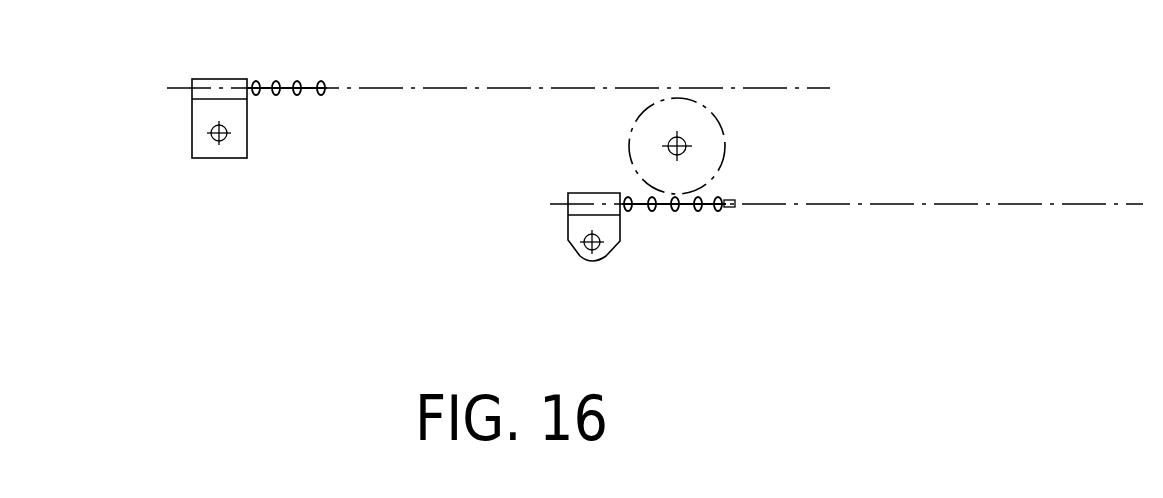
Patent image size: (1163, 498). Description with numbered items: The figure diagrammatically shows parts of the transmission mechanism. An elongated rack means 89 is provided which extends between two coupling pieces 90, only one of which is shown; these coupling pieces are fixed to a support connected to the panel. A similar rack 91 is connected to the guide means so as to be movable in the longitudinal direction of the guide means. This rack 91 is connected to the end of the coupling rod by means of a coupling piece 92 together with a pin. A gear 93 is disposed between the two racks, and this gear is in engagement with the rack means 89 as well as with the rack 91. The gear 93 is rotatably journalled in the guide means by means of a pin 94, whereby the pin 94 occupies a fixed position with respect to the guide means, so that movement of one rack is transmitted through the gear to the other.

The rack means 89 is at (307, 84).
The coupling piece 90 is at (223, 137).
The rack 91 is at (732, 207).
The coupling piece 92 is at (604, 247).
The gear 93 is at (710, 110).
The pin 94 is at (688, 148).